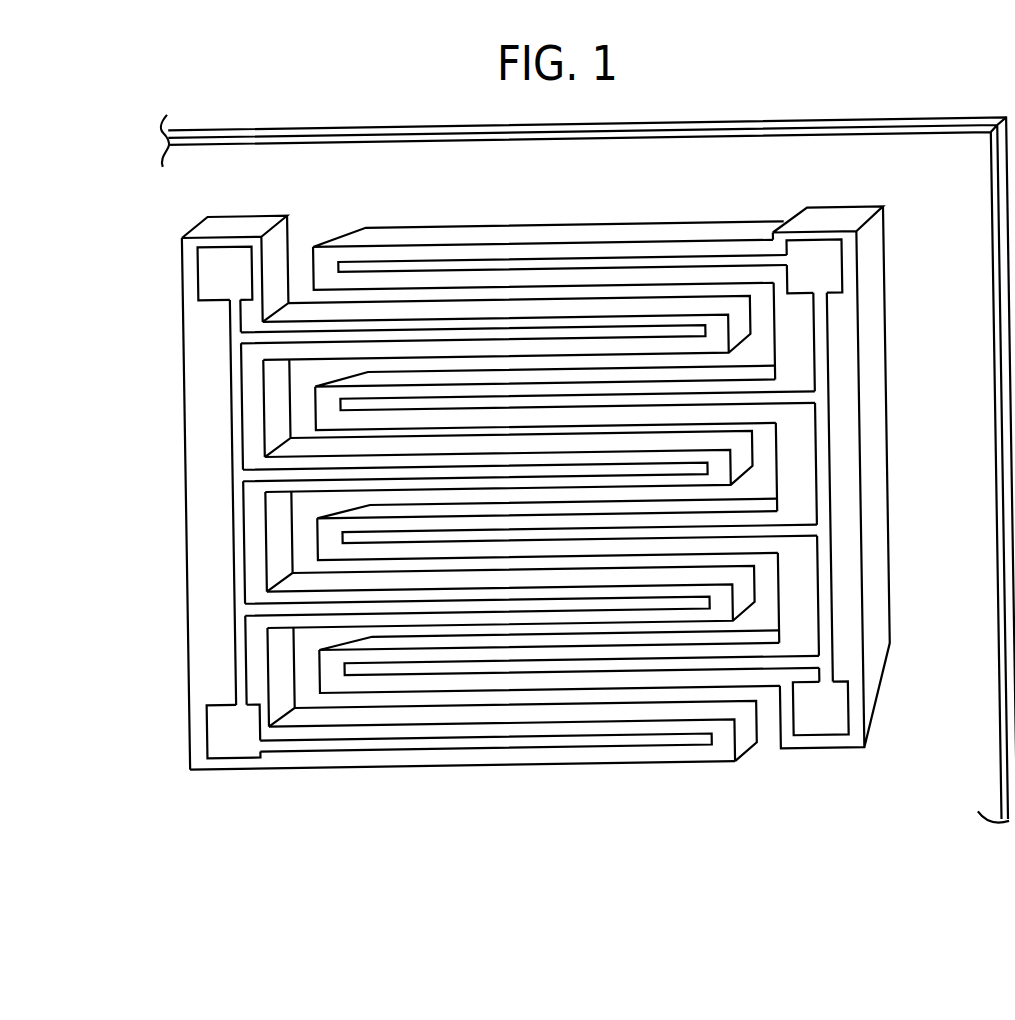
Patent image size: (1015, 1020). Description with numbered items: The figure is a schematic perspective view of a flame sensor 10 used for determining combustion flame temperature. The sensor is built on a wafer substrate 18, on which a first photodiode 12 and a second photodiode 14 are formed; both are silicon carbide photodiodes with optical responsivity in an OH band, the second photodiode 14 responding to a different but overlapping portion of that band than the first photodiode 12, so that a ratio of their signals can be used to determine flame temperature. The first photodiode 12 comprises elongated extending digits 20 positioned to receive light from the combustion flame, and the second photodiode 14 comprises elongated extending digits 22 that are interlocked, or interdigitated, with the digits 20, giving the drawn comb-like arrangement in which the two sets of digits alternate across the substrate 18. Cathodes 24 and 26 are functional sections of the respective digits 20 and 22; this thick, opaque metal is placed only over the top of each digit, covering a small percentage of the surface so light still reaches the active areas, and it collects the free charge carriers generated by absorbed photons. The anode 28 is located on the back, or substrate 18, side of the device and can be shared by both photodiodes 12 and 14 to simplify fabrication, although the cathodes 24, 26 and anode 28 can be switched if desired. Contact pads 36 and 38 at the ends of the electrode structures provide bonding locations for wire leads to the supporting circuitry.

The flame sensor 10 is at (674, 108).
The first photodiode 12 is at (644, 206).
The second photodiode 14 is at (324, 780).
The substrate 18 is at (888, 128).
The digits 20 is at (467, 228).
The digits 22 is at (295, 314).
The cathode 24 is at (828, 525).
The cathode 26 is at (238, 473).
The anode 28 is at (940, 120).
The contact pad 36 is at (817, 248).
The contact pad 38 is at (215, 275).